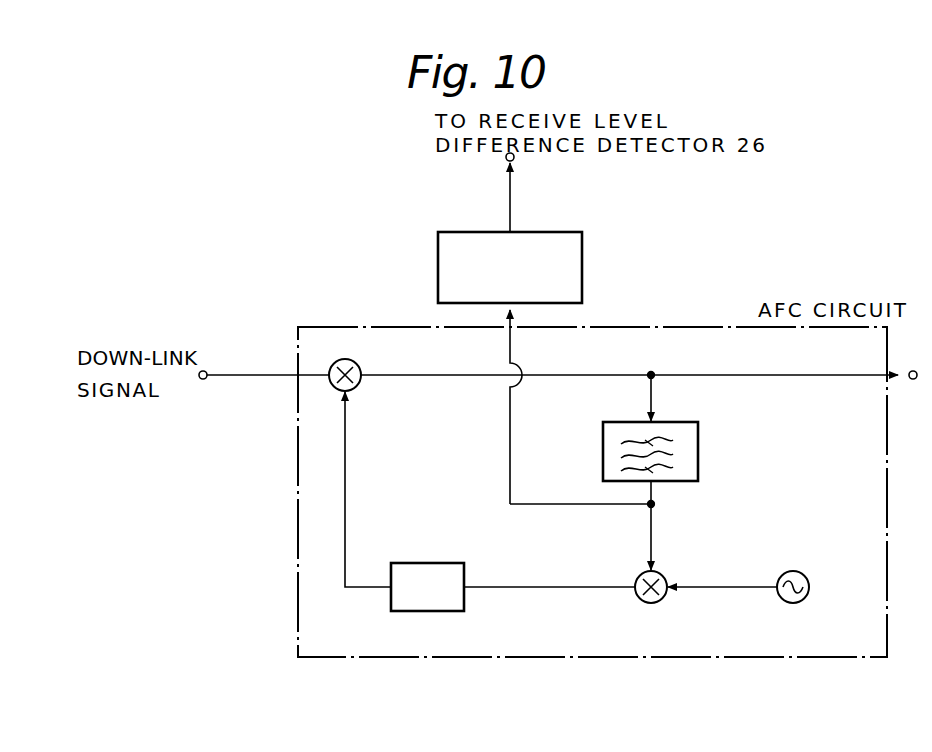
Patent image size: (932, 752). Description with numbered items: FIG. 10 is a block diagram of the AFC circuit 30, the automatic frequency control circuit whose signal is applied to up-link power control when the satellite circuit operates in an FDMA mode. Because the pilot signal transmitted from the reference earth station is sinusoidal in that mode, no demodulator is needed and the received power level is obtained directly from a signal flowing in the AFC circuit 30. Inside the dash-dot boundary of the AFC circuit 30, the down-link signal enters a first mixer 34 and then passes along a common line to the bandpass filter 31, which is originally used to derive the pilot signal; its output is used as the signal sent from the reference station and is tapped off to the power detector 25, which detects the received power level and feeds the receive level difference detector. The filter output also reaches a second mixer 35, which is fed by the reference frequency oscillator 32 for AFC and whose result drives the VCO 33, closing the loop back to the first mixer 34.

The power detector 25 is at (583, 243).
The AFC circuit 30 is at (706, 328).
The bandpass filter 31 is at (700, 436).
The reference frequency oscillator for AFC 32 is at (787, 602).
The VCO 33 is at (466, 572).
The mixer 34 is at (356, 387).
The mixer 35 is at (643, 601).